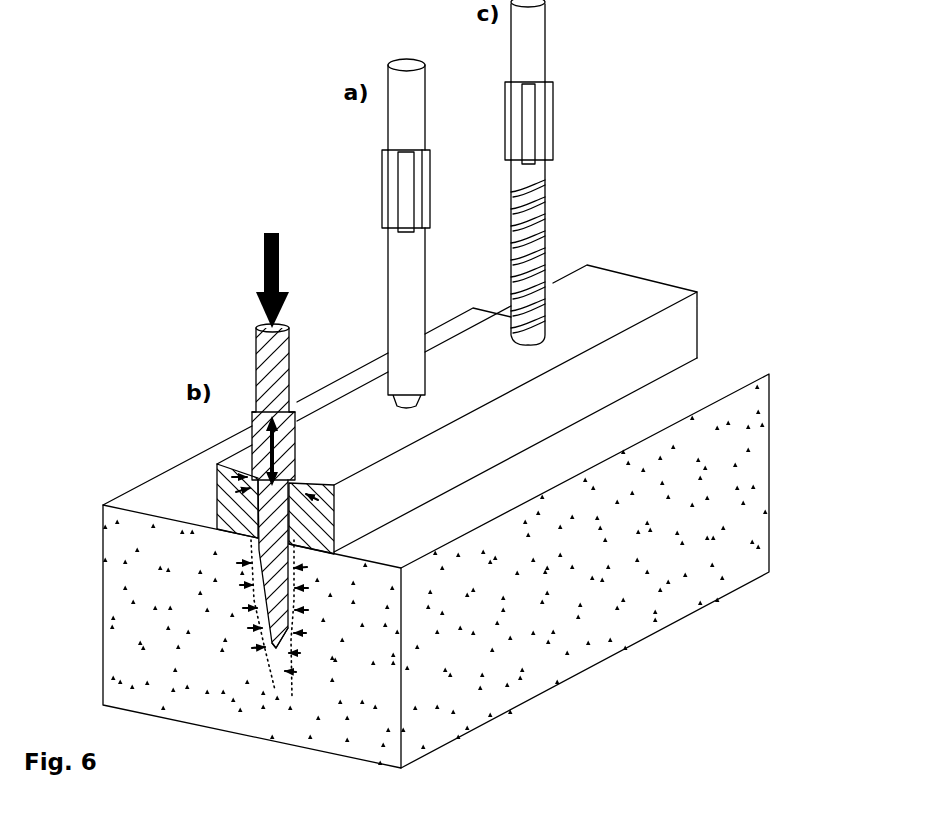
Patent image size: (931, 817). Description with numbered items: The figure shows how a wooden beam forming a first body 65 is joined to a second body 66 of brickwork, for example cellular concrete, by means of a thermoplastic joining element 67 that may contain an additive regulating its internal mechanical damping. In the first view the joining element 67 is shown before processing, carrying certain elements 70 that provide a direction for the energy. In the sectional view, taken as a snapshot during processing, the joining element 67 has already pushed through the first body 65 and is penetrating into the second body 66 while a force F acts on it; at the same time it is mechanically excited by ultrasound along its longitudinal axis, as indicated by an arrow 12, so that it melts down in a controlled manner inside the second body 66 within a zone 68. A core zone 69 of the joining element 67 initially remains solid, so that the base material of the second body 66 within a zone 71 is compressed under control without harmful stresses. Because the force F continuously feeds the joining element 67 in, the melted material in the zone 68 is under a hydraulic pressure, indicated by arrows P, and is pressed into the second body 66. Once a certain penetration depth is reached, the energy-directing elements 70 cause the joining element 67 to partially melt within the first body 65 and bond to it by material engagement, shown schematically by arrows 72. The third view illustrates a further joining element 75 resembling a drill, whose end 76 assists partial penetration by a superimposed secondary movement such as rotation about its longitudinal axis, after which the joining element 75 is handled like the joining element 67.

The arrow 12 is at (280, 459).
The first body 65 is at (682, 335).
The second body 66 is at (745, 434).
The joining element 67 is at (330, 131).
The zone 68 is at (264, 670).
The core zone 69 is at (277, 601).
The elements that provide a direction for the energy 70 is at (433, 183).
The zone 71 is at (268, 657).
The arrows 72 is at (322, 485).
The joining element 75 is at (600, 60).
The end 76 is at (557, 335).
The force F is at (279, 280).
The arrows P is at (307, 664).